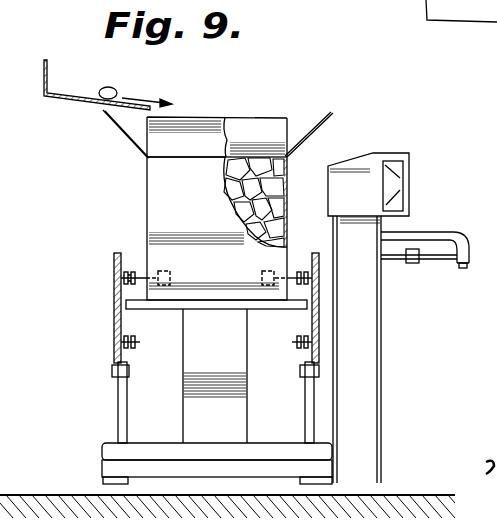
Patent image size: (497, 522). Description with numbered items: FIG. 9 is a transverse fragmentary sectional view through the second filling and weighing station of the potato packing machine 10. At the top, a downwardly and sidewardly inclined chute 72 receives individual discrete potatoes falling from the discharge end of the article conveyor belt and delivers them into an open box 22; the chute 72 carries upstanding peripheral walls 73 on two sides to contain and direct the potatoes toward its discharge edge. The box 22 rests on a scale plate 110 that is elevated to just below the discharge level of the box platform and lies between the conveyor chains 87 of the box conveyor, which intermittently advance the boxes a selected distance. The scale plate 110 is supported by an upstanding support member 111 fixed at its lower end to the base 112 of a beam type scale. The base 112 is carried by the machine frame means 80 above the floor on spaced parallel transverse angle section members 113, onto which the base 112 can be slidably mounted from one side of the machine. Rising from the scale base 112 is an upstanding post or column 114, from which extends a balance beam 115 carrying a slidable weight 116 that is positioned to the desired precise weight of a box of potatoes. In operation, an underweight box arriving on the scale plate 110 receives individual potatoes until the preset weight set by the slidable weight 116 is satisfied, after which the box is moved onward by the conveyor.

The apparatus 10 is at (461, 27).
The open box 22 is at (281, 116).
The chute 72 is at (102, 90).
The upstanding peripheral walls 73 is at (52, 68).
The machine frame means 80 is at (114, 343).
The endless side chains 87 is at (138, 343).
The scale plate 110 is at (224, 300).
The upstanding support member 111 is at (182, 408).
The base 112 is at (254, 443).
The transverse angle section members 113 is at (118, 410).
The post or column 114 is at (381, 380).
The balance beam 115 is at (392, 262).
The slidable weight 116 is at (414, 263).